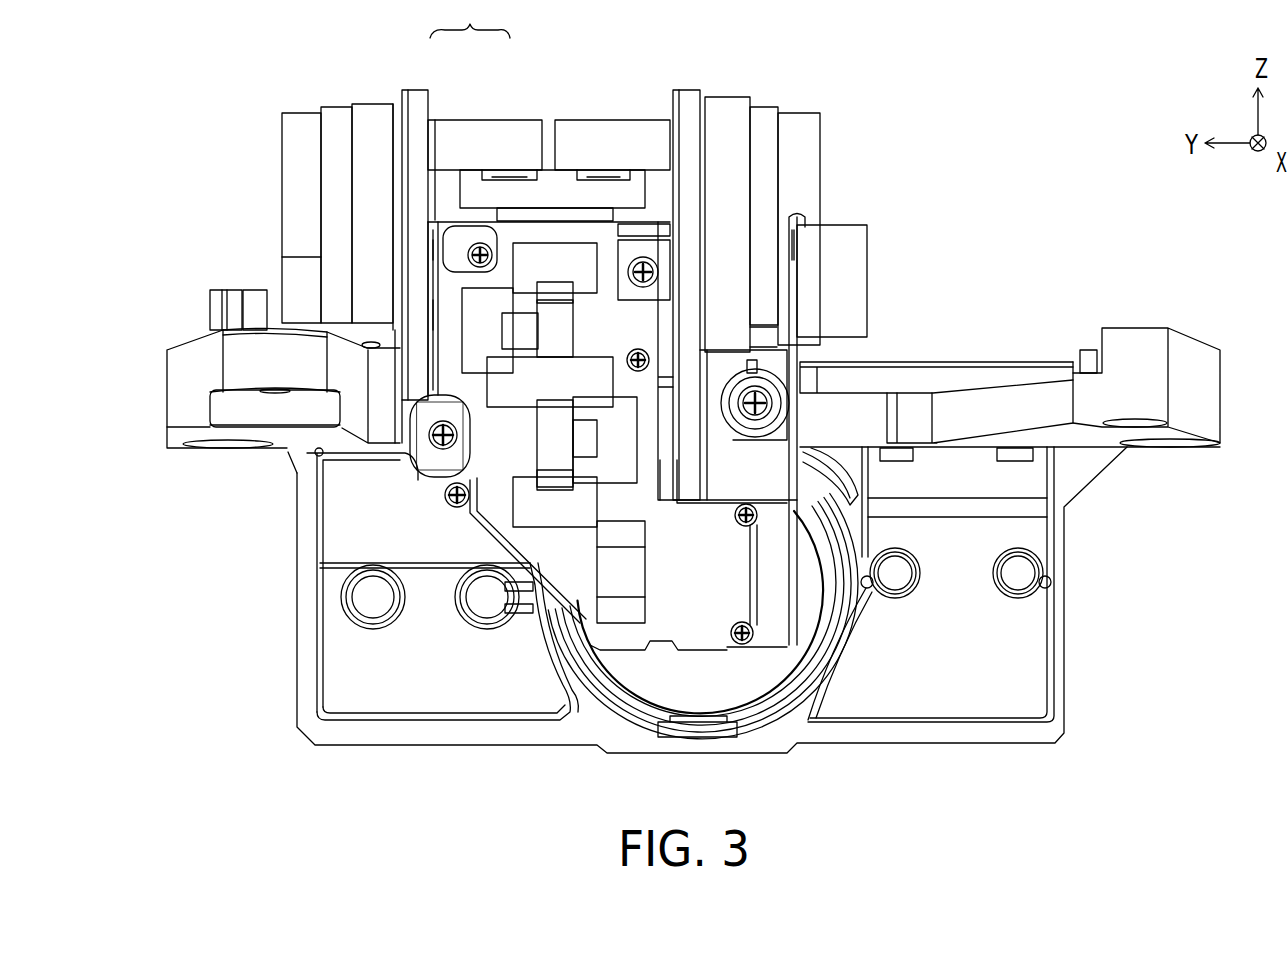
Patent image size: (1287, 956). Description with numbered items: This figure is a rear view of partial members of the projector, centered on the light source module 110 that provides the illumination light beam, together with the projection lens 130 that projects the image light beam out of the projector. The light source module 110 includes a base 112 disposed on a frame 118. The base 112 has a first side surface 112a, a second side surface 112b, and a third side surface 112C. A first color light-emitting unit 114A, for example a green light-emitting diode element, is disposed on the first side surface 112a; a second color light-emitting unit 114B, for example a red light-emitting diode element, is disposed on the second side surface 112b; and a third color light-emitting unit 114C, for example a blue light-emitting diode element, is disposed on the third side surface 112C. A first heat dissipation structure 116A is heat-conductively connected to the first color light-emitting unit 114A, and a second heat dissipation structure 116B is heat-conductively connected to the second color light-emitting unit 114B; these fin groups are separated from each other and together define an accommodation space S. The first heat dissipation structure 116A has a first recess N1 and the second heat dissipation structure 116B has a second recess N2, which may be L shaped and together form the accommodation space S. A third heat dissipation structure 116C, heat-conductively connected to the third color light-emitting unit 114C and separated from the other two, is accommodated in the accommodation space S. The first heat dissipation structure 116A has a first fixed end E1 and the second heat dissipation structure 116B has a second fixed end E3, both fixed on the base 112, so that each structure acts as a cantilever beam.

The light source module 110 is at (858, 130).
The base 112 is at (520, 443).
The first side surface 112a is at (433, 277).
The second side surface 112b is at (672, 423).
The third side surface 112C is at (557, 207).
The first color light-emitting unit 114A is at (428, 310).
The second color light-emitting unit 114B is at (667, 453).
The third color light-emitting unit 114C is at (568, 210).
The first heat dissipation structure 116A is at (413, 175).
The second heat dissipation structure 116B is at (700, 233).
The third heat dissipation structure 116C is at (505, 187).
The frame 118 is at (168, 392).
The projection lens 130 is at (700, 687).
The first fixed end E1 is at (395, 152).
The second fixed end E3 is at (700, 152).
The first recess N1 is at (473, 220).
The second recess N2 is at (443, 194).
The accommodation space S is at (470, 19).